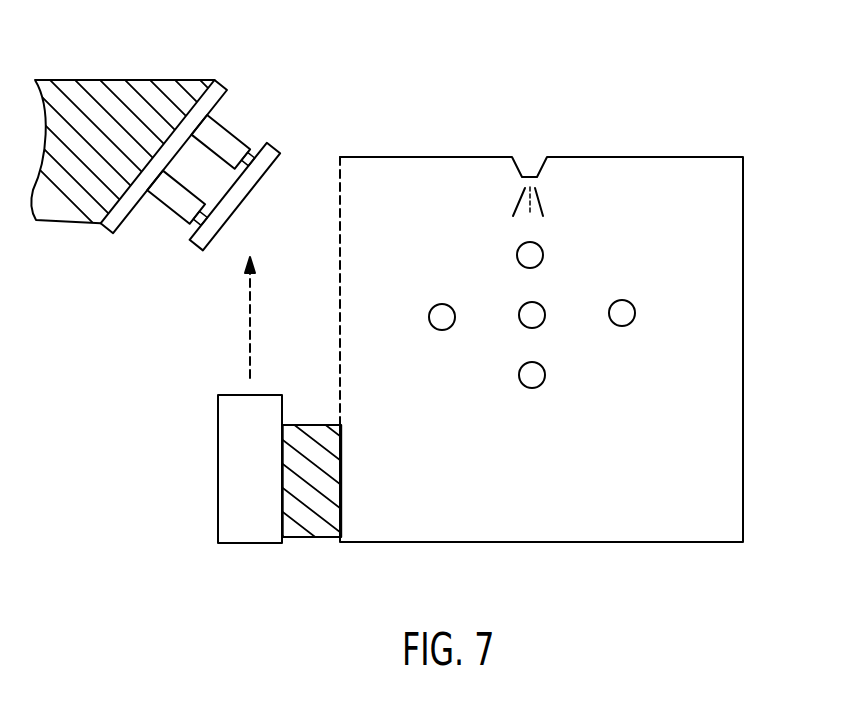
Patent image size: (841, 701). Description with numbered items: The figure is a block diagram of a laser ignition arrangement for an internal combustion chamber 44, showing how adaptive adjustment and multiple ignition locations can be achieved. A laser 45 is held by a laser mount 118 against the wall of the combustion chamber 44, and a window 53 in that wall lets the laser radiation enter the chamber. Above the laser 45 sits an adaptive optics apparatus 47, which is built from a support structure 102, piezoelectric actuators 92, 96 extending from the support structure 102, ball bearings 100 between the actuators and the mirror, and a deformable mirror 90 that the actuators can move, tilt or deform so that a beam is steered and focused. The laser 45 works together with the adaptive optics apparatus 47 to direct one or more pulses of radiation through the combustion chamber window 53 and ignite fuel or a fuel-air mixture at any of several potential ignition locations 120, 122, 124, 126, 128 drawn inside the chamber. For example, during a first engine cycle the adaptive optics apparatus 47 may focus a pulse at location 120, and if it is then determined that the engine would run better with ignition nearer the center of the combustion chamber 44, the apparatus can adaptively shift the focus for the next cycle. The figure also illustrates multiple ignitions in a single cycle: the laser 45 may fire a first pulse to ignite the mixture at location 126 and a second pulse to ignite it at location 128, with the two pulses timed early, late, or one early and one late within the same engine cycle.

The internal combustion chamber 44 is at (743, 445).
The laser 45 is at (252, 545).
The adaptive optics apparatus 47 is at (310, 68).
The window 53 is at (342, 245).
The deformable mirror 90 is at (252, 190).
The piezoelectric actuator 92 is at (230, 131).
The piezoelectric actuator 96 is at (168, 207).
The ball bearings 100 is at (196, 222).
The support structure 102 is at (216, 79).
The laser mount 118 is at (312, 538).
The ignition location 120 is at (543, 252).
The ignition location 122 is at (545, 312).
The ignition location 124 is at (545, 372).
The ignition location 126 is at (455, 313).
The ignition location 128 is at (635, 310).